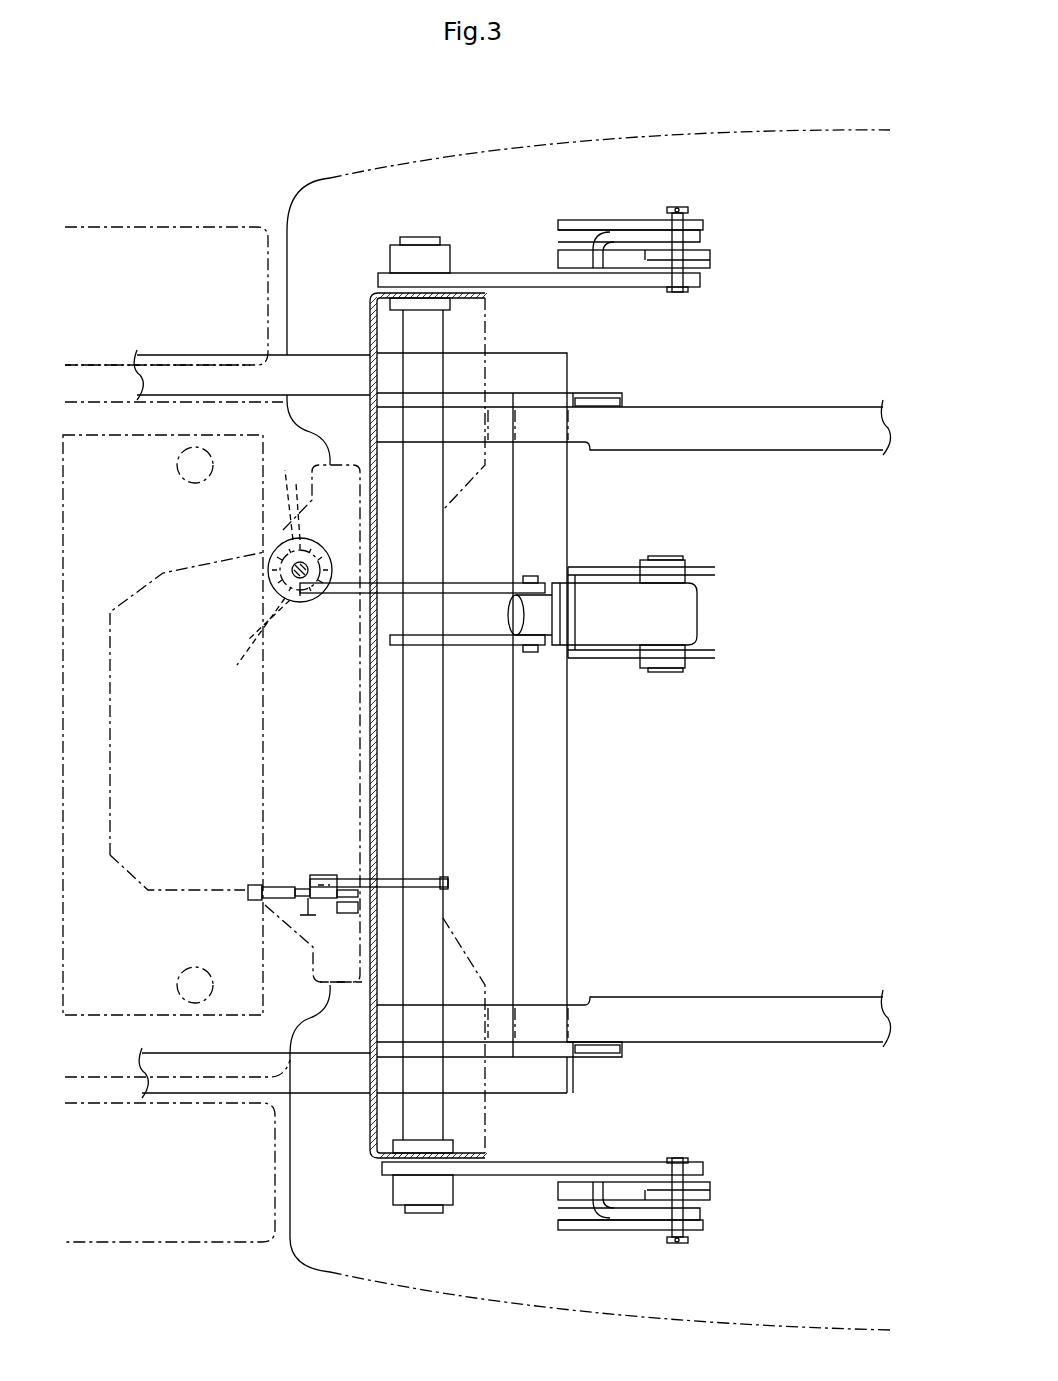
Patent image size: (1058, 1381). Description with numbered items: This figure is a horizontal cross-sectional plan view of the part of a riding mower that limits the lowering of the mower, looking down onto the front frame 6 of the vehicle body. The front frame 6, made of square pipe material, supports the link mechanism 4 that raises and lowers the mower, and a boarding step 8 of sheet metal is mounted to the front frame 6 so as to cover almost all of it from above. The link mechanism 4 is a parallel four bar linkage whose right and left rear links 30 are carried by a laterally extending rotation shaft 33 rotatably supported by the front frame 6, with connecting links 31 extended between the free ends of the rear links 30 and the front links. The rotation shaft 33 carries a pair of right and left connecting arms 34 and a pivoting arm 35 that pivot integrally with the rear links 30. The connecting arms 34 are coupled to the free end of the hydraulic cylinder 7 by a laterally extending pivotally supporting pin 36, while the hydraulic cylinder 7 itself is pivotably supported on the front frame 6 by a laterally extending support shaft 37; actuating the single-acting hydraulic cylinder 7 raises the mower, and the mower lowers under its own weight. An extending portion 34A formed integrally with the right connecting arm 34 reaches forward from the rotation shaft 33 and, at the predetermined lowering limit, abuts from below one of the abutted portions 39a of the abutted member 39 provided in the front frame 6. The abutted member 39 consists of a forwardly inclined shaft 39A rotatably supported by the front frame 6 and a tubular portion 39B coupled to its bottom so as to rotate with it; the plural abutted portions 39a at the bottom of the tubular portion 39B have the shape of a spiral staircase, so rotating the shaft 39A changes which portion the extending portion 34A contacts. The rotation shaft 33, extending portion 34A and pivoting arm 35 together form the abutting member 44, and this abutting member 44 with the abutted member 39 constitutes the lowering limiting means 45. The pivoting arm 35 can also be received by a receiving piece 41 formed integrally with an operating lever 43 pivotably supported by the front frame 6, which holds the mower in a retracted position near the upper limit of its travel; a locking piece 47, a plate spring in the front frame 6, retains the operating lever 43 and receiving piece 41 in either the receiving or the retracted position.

The link mechanism 4 is at (738, 237).
The front frame 6 is at (205, 340).
The hydraulic cylinder 7 is at (690, 612).
The boarding step 8 is at (212, 222).
The rear links 30 is at (625, 290).
The connecting links 31 is at (622, 222).
The rotation shaft 33 is at (427, 798).
The connecting arms 34 is at (453, 640).
The extending portion 34A is at (330, 598).
The pivoting arm 35 is at (360, 878).
The pivotally supporting pin 36 is at (530, 655).
The support shaft 37 is at (663, 672).
The abutted member 39 is at (251, 575).
The forwardly inclined shaft 39A is at (285, 557).
The tubular portion 39B is at (300, 572).
The abutted portions 39a is at (264, 571).
The receiving piece 41 is at (325, 875).
The operating lever 43 is at (258, 888).
The abutting member 44 is at (454, 570).
The lowering limiting means 45 is at (303, 630).
The locking piece 47 is at (318, 900).